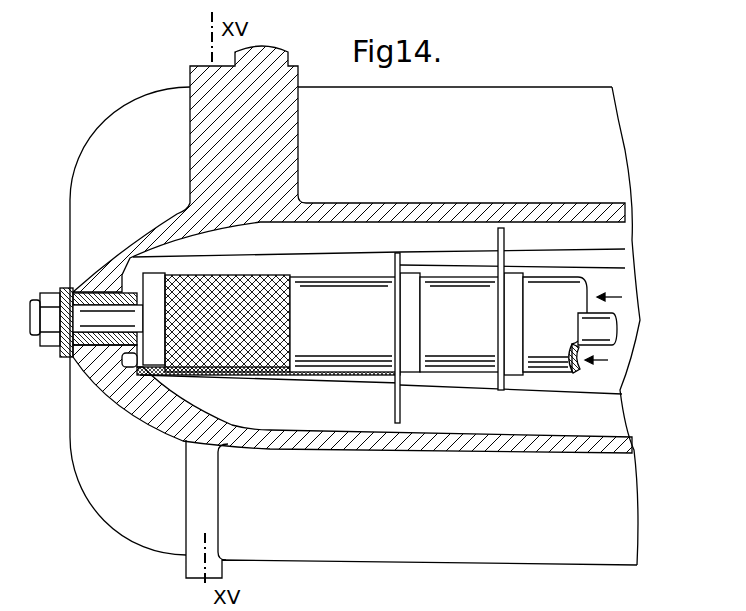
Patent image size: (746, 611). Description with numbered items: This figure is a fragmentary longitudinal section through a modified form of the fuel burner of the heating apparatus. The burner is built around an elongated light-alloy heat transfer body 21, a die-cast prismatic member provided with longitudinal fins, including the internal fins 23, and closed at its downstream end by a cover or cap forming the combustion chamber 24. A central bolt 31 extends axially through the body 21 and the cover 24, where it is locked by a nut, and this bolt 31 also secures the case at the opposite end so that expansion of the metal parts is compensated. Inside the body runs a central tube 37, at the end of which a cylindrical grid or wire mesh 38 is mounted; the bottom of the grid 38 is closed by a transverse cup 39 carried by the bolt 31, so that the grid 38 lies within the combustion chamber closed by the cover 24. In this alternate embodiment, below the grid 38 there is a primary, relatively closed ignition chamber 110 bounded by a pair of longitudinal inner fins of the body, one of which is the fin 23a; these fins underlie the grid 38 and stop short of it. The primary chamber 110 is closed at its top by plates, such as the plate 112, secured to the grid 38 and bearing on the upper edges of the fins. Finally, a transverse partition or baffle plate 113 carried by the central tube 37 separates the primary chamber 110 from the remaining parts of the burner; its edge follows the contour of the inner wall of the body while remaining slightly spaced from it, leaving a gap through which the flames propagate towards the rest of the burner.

The prismatic body 21 is at (537, 210).
The internal fins 23 is at (383, 232).
The longitudinal inner fin 23a is at (358, 385).
The cover or cap forming the combustion chamber 24 is at (150, 408).
The central bolt 31 is at (612, 326).
The central tube 37 is at (555, 360).
The cylindrical grid or wire mesh 38 is at (225, 278).
The transverse cup 39 is at (155, 282).
The primary ignition chamber 110 is at (320, 415).
The plate 112 is at (265, 378).
The transverse partition or baffle plate 113 is at (402, 410).